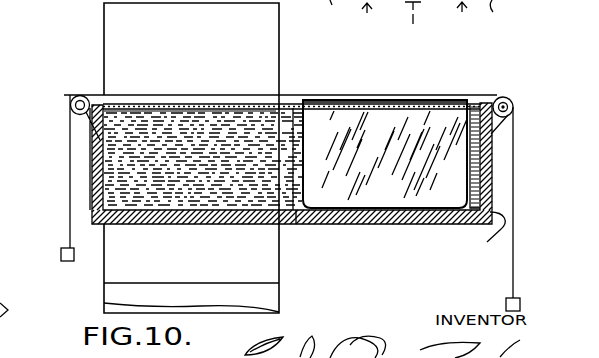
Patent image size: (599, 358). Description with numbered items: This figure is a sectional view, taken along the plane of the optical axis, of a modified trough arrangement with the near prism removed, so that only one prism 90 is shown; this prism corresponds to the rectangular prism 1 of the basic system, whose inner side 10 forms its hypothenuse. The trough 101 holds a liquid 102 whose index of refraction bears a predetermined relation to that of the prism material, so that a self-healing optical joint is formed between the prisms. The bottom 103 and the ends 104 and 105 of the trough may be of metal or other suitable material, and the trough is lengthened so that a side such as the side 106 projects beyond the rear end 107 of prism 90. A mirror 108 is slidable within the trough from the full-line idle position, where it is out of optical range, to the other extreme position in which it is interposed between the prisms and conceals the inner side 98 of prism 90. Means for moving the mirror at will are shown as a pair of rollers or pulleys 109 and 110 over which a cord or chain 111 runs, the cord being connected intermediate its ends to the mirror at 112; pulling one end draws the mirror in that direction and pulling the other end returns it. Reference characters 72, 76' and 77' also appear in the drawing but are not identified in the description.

The rectangular prism 1 is at (106, 23).
The inner side 10 is at (191, 158).
The base 72 is at (123, 293).
The prism 90 is at (196, 104).
The inner side 98 is at (245, 116).
The trough 101 is at (121, 98).
The liquid 102 is at (120, 152).
The bottom 103 is at (358, 224).
The end 104 is at (93, 183).
The end 105 is at (484, 237).
The side 106 is at (297, 104).
The rear end 107 is at (298, 226).
The mirror 108 is at (429, 108).
The roller or pulley 109 is at (75, 97).
The roller or pulley 110 is at (510, 88).
The cord or chain 111 is at (66, 217).
The mirror connection 112 is at (387, 95).
The flow arrow 76' is at (329, 14).
The flow arrow 77' is at (505, 19).